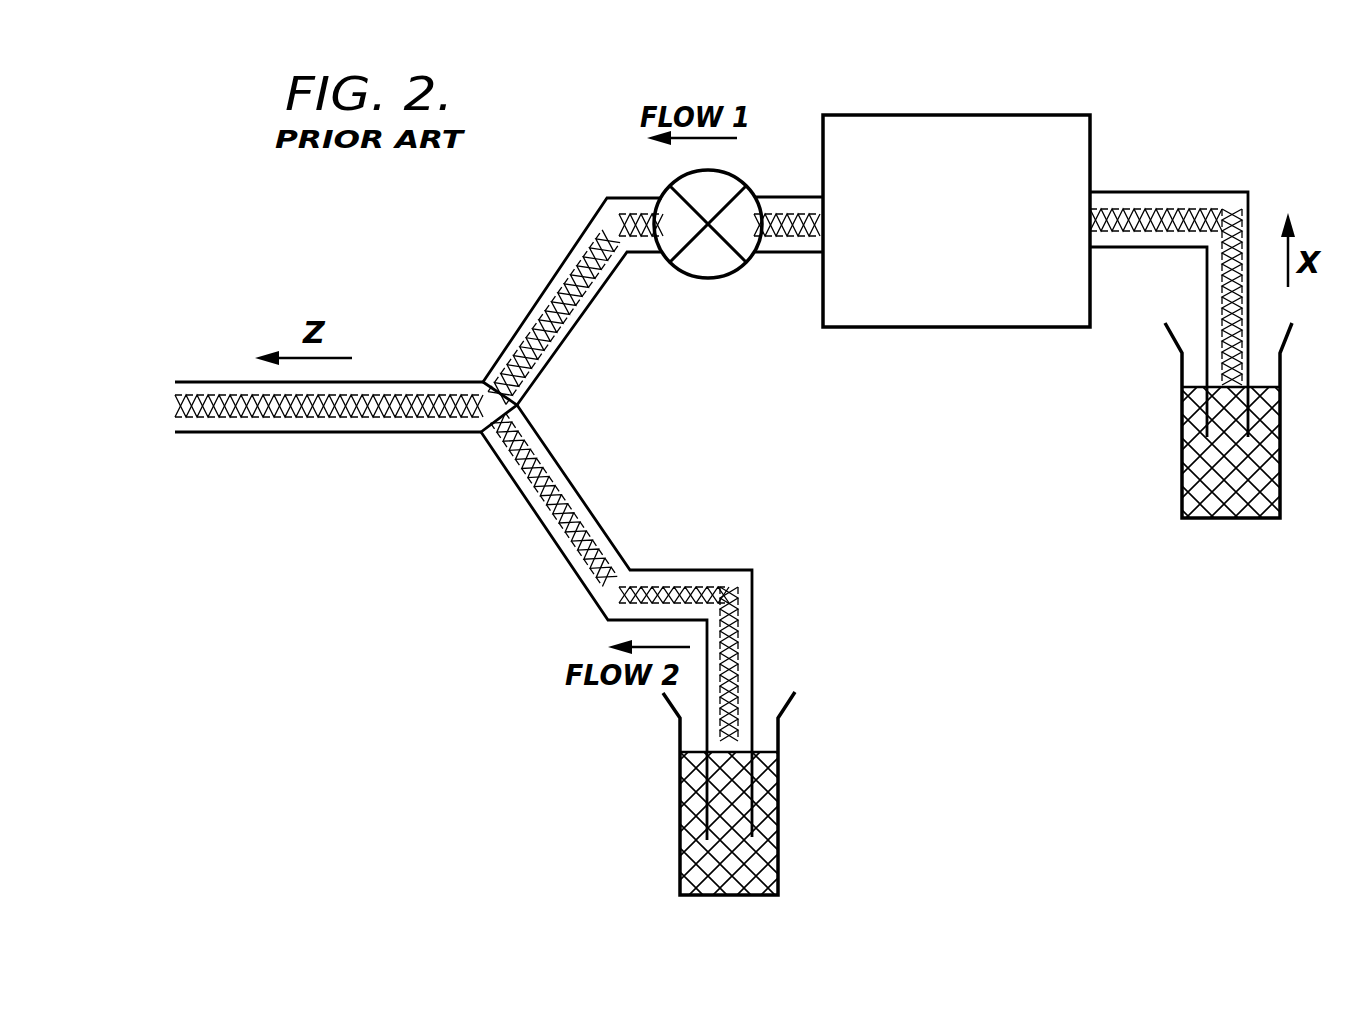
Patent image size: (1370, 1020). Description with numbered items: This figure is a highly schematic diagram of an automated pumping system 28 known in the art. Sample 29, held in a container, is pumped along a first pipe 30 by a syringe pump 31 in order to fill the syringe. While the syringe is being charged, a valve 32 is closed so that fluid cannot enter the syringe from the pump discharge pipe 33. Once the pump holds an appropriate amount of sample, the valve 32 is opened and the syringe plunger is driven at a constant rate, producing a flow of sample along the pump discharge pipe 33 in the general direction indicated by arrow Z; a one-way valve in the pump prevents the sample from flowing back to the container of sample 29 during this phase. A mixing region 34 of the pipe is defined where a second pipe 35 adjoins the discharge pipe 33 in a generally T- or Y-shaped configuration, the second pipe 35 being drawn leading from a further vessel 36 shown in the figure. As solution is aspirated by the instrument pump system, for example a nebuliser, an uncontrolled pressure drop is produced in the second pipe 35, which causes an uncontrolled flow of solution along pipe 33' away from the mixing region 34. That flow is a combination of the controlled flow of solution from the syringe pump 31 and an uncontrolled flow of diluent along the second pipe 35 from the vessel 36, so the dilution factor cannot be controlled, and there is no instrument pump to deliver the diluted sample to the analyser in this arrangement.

The automated pumping system 28 is at (325, 623).
The sample 29 is at (1282, 445).
The first pipe 30 is at (1158, 192).
The syringe pump 31 is at (955, 115).
The valve 32 is at (712, 279).
The pump discharge pipe 33 is at (623, 301).
The pipe 33' is at (329, 443).
The mixing region 34 is at (517, 405).
The second pipe 35 is at (690, 587).
The second container 36 is at (780, 812).